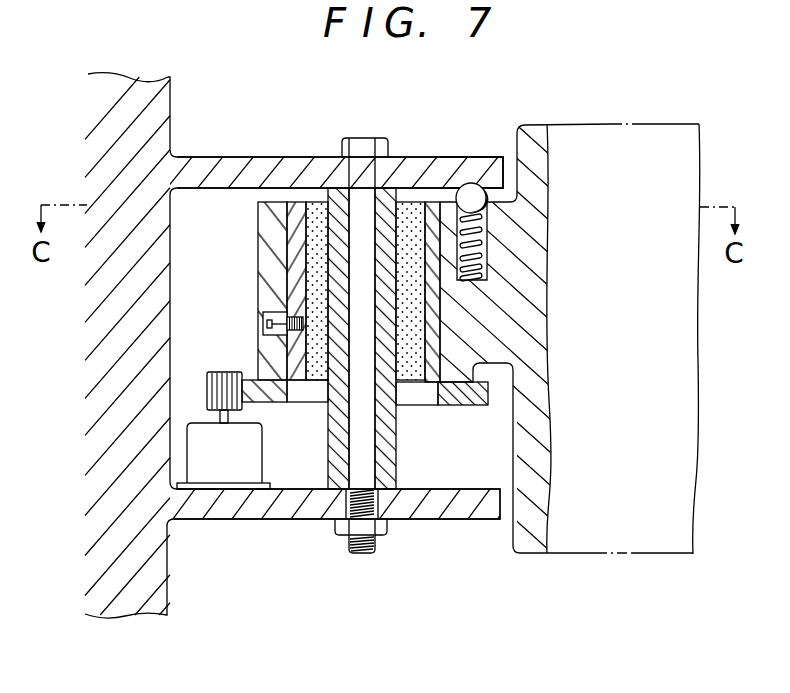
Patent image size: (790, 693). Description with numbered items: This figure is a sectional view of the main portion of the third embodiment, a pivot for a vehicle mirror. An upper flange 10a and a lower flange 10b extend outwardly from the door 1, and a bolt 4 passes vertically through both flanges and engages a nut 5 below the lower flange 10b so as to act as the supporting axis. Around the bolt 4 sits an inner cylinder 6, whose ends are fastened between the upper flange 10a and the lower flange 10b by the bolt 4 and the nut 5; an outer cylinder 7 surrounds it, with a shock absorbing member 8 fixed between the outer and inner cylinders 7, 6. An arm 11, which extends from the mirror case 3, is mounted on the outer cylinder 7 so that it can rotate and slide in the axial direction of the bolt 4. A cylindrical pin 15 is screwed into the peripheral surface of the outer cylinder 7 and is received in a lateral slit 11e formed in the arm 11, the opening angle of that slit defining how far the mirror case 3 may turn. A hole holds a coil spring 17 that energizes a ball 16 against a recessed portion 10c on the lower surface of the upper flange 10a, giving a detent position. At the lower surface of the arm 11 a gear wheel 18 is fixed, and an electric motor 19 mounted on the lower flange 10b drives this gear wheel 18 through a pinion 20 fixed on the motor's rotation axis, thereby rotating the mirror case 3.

The door 1 is at (158, 595).
The mirror case 3 is at (527, 542).
The bolt 4 is at (364, 140).
The nut 5 is at (335, 533).
The inner cylinder 6 is at (338, 195).
The outer cylinder 7 is at (433, 210).
The shock absorbing member 8 is at (411, 208).
The upper flange 10a is at (231, 163).
The lower flange 10b is at (223, 513).
The recessed portion 10c is at (455, 180).
The arm 11 is at (481, 352).
The lateral slit 11e is at (260, 312).
The cylindrical pin 15 is at (262, 330).
The ball 16 is at (475, 191).
The coil spring 17 is at (487, 232).
The gear wheel 18 is at (463, 407).
The electric motor 19 is at (264, 448).
The pinion 20 is at (211, 372).